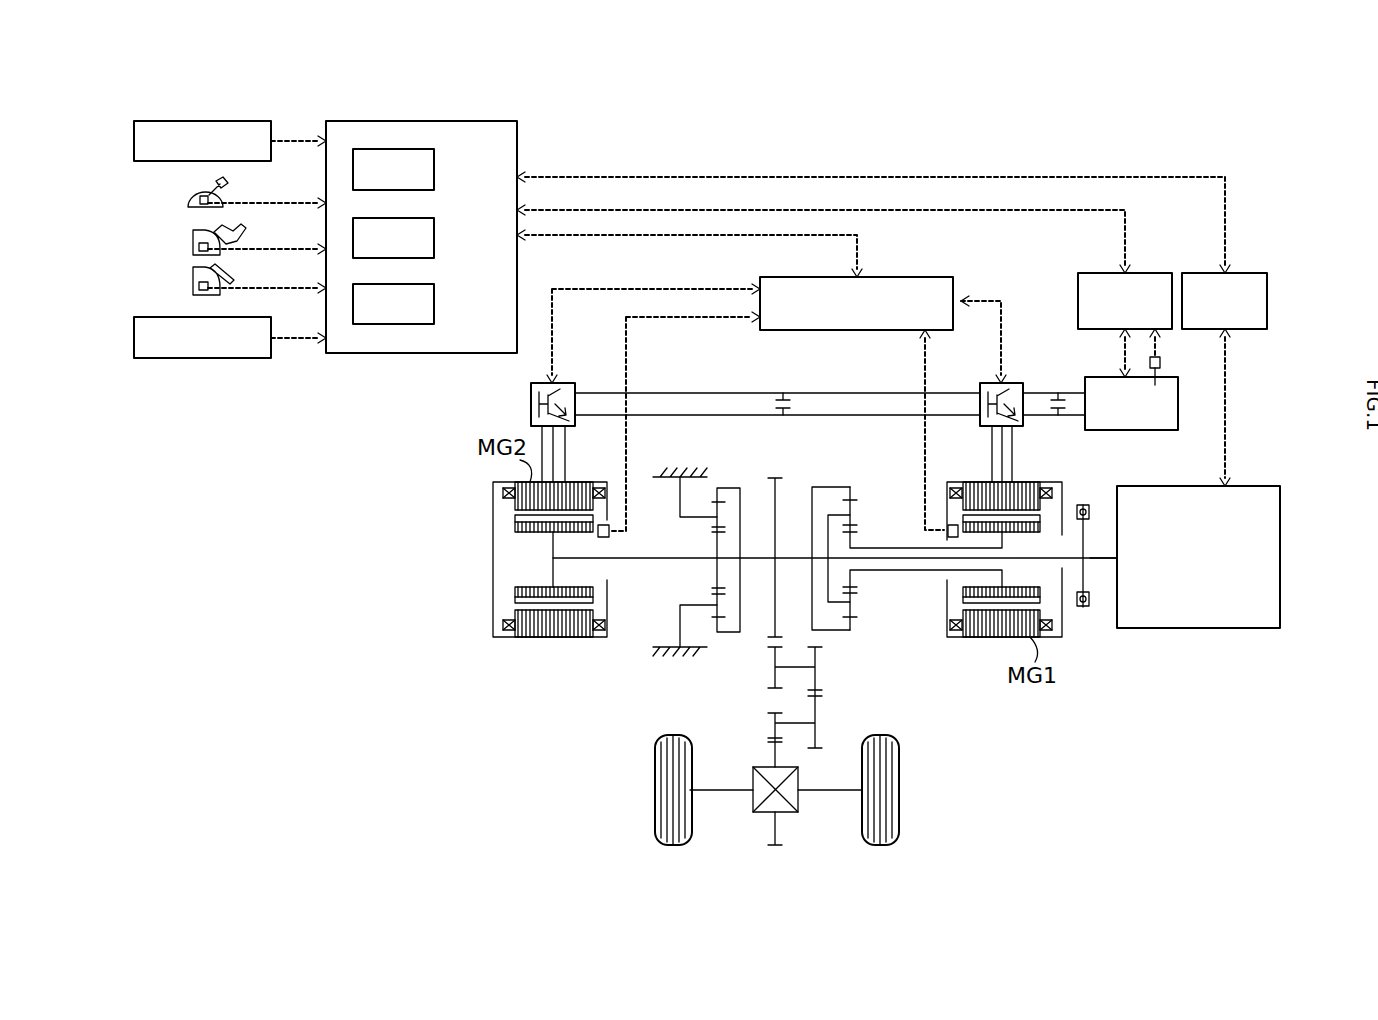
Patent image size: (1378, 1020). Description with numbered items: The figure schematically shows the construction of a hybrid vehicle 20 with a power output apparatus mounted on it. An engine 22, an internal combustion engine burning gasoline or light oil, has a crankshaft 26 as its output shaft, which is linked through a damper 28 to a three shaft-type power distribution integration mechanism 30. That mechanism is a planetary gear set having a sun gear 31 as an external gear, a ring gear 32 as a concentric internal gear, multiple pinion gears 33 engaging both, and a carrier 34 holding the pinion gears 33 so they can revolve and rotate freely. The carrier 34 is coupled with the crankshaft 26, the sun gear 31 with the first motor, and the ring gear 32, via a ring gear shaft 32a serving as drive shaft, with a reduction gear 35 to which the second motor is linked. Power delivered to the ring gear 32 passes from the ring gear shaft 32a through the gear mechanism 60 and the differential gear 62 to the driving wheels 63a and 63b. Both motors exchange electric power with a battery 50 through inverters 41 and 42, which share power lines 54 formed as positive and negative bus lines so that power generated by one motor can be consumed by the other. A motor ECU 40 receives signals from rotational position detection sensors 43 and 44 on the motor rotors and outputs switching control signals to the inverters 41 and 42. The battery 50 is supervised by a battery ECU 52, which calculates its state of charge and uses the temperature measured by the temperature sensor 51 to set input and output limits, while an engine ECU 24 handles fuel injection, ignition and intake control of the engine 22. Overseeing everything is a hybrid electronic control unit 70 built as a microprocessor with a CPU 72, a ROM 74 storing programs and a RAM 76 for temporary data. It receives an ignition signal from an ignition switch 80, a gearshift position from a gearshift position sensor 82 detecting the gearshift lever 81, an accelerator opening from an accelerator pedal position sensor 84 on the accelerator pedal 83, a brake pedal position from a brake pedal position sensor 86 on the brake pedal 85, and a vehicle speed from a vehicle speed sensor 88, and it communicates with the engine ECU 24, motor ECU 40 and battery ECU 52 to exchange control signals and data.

The hybrid vehicle 20 is at (1041, 147).
The engine 22 is at (1281, 522).
The engine ECU 24 is at (1240, 273).
The crankshaft 26 is at (1100, 558).
The damper 28 is at (1086, 607).
The power distribution integration mechanism 30 is at (907, 542).
The sun gear 31 is at (855, 572).
The ring gear 32 is at (855, 621).
The ring gear shaft 32a is at (758, 557).
The pinion gears 33 is at (855, 598).
The carrier 34 is at (824, 523).
The reduction gear 35 is at (732, 466).
The motor ECU 40 is at (895, 277).
The inverter 41 is at (1016, 383).
The inverter 42 is at (562, 383).
The rotational position detection sensor 43 is at (948, 522).
The rotational position detection sensor 44 is at (606, 525).
The battery 50 is at (1130, 430).
The temperature sensor 51 is at (1162, 362).
The battery ECU 52 is at (1103, 273).
The power lines 54 is at (840, 415).
The gear mechanism 60 is at (863, 711).
The differential gear 62 is at (798, 803).
The driving wheel 63a is at (655, 822).
The driving wheel 63b is at (899, 822).
The hybrid electronic control unit 70 is at (440, 121).
The CPU 72 is at (434, 168).
The ROM 74 is at (434, 238).
The RAM 76 is at (434, 306).
The ignition switch 80 is at (134, 131).
The gearshift lever 81 is at (217, 183).
The gearshift position sensor 82 is at (200, 201).
The accelerator pedal 83 is at (226, 233).
The accelerator pedal position sensor 84 is at (199, 248).
The brake pedal 85 is at (231, 278).
The brake pedal position sensor 86 is at (199, 287).
The vehicle speed sensor 88 is at (134, 329).